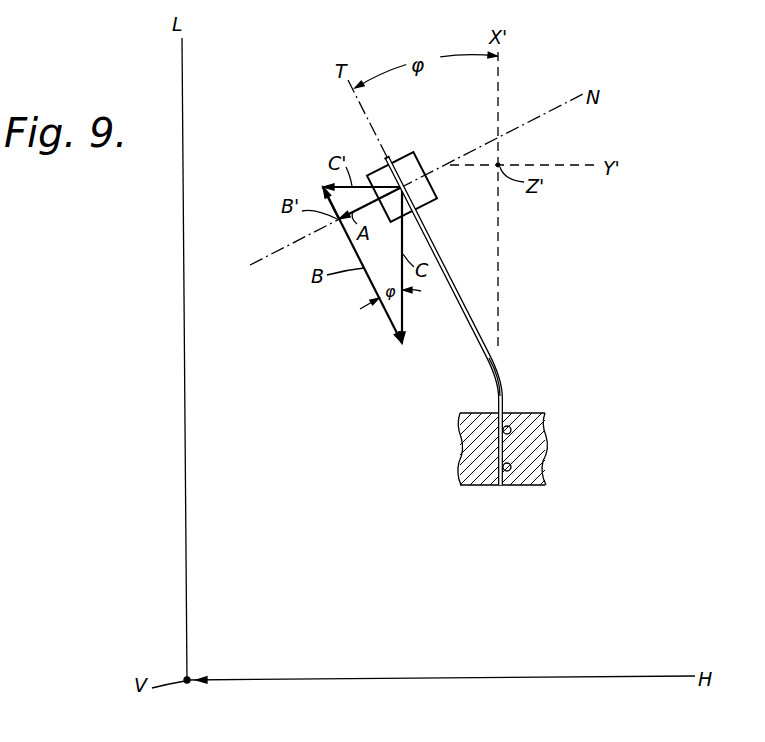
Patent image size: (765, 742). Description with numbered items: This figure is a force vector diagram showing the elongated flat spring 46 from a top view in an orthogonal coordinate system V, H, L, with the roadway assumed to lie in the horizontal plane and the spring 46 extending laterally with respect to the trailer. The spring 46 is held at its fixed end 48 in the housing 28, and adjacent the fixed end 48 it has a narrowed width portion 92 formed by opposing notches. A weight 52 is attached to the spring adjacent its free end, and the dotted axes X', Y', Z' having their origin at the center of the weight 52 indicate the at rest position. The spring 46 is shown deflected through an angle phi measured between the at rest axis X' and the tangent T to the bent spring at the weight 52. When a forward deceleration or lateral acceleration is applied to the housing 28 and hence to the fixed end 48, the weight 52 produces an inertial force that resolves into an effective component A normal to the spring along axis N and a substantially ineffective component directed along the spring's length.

The weight 52 is at (415, 153).
The elongated flat spring 46 is at (444, 265).
The narrowed width portion 92 is at (500, 383).
The fixed end 48 is at (503, 450).
The housing 28 is at (540, 477).